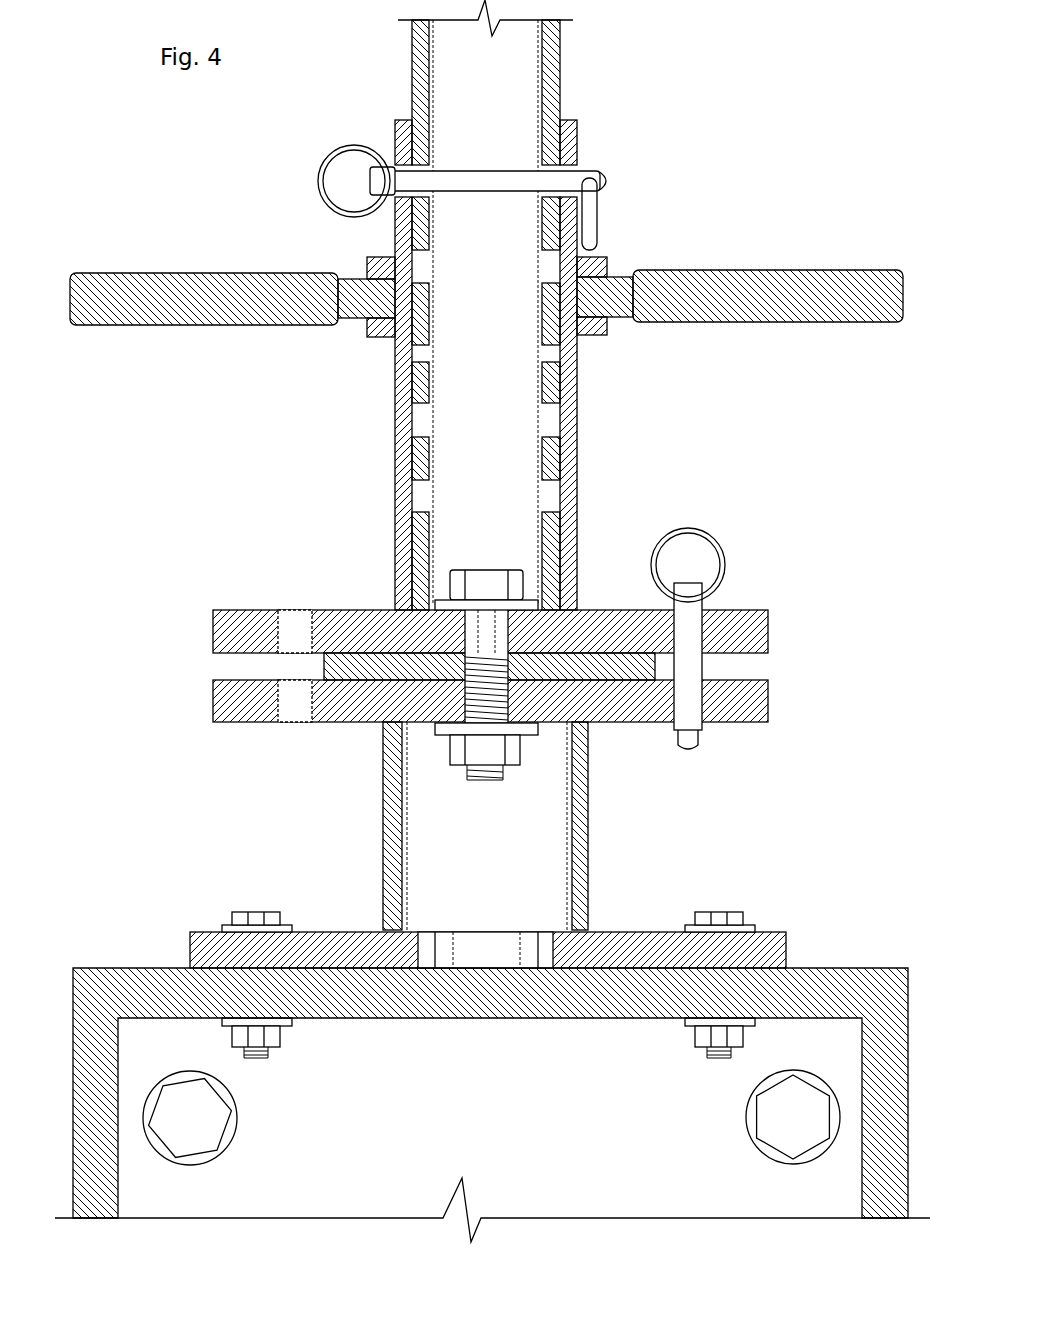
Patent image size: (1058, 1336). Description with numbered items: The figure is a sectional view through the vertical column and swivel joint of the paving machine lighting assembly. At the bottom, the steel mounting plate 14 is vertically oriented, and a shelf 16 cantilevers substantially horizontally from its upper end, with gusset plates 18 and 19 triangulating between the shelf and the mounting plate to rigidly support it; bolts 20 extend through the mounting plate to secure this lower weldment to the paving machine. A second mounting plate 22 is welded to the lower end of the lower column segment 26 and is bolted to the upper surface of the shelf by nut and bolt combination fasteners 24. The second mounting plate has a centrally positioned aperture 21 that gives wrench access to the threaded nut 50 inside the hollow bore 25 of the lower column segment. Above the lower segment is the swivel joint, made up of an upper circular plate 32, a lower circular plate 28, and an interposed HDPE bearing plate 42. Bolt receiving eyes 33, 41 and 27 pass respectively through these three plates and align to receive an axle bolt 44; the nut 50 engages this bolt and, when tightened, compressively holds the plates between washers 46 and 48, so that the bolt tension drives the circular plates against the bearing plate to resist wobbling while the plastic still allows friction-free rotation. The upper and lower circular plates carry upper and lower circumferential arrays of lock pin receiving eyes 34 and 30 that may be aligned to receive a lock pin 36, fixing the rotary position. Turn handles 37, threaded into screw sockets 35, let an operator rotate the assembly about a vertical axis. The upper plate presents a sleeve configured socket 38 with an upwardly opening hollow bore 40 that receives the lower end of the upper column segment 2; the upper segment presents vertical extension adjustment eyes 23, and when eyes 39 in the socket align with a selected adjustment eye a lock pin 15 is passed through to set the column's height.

The upper column segment 2 is at (420, 75).
The mounting plate 14 is at (390, 1150).
The lock pin 15 is at (470, 185).
The shelf 16 is at (812, 990).
The gusset plate 18 is at (897, 1087).
The gusset plate 19 is at (80, 1080).
The bolt 20 is at (785, 1130).
The centrally positioned aperture 21 is at (510, 945).
The second mounting plate 22 is at (345, 940).
The vertical extension adjustment eyes 23 is at (550, 340).
The nut and bolt combination fasteners 24 is at (255, 915).
The hollow bore 25 is at (494, 883).
The lower column segment 26 is at (388, 800).
The bolt receiving eye 27 is at (505, 695).
The lower circular plate 28 is at (740, 705).
The lower circumferential array of lock pin receiving eyes 30 is at (300, 710).
The upper circular plate 32 is at (745, 625).
The bolt receiving eye 33 is at (462, 640).
The upper circumferential array of lock pin receiving eyes 34 is at (295, 630).
The screw socket 35 is at (590, 265).
The lock pin 36 is at (700, 658).
The turn handle 37 is at (200, 295).
The sleeve configured socket 38 is at (565, 360).
The eyes 39 is at (405, 145).
The hollow bore 40 is at (513, 525).
The bolt receiving eye 41 is at (440, 665).
The bearing plate 42 is at (690, 630).
The axle bolt 44 is at (485, 570).
The washer 46 is at (530, 598).
The washer 48 is at (440, 737).
The threaded nut 50 is at (510, 752).